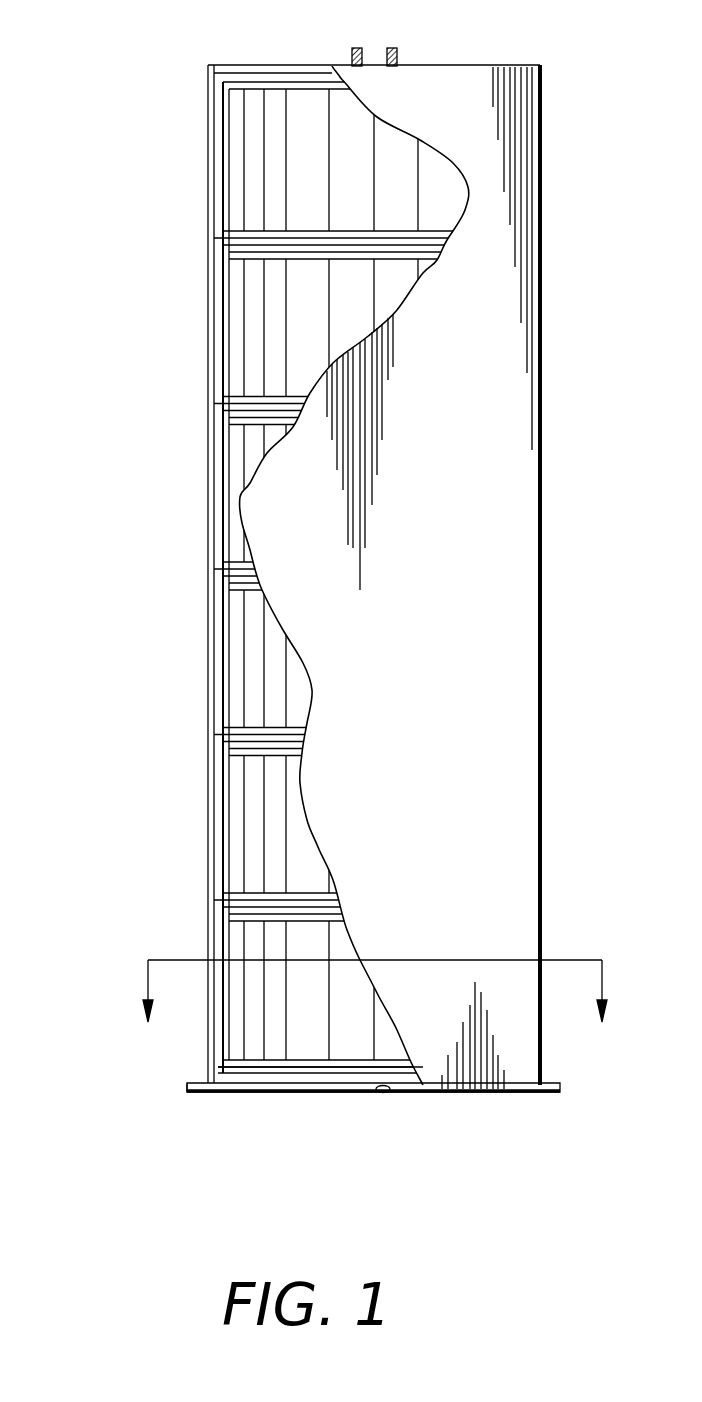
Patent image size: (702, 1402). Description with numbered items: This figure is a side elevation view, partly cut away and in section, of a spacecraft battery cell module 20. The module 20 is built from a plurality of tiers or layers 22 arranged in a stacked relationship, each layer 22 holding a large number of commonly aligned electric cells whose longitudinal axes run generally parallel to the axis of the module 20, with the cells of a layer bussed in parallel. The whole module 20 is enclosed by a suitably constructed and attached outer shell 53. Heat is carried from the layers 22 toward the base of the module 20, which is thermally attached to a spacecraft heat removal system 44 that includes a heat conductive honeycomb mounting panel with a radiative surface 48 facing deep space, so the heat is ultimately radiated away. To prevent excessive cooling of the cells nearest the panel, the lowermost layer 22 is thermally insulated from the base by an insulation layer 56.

The spacecraft battery cell module 20 is at (327, 607).
The tiers or layers 22 is at (233, 212).
The outer shell 53 is at (210, 689).
The spacecraft heat removal system 44 is at (325, 1098).
The insulation layer 56 is at (268, 1078).
The radiative surface 48 is at (392, 1093).